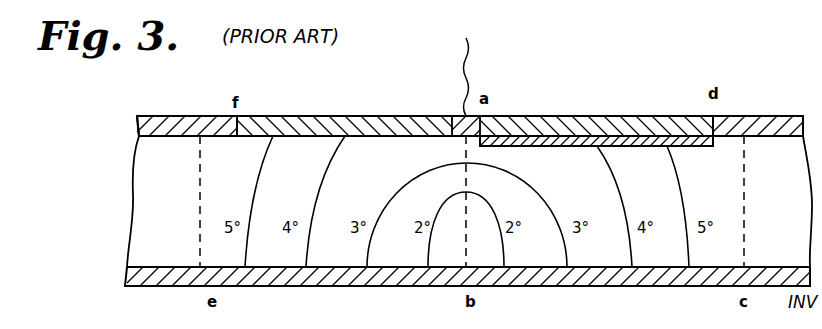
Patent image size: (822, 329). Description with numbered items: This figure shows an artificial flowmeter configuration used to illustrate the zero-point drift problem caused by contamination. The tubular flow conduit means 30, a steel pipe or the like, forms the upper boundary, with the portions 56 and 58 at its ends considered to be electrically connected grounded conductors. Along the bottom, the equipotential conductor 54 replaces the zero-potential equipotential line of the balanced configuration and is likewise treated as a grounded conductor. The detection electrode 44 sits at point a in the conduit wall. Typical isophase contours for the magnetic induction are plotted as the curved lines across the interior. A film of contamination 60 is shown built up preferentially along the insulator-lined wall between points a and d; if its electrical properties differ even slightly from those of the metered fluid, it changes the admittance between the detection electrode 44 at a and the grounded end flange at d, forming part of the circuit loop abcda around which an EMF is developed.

The tubular flow conduit means 30 is at (288, 116).
The detection electrode 44 is at (455, 115).
The equipotential conductor 54 is at (496, 286).
The grounded conductor portion 56 is at (155, 112).
The grounded conductor portion 58 is at (762, 122).
The dielectric layer 60 is at (635, 146).